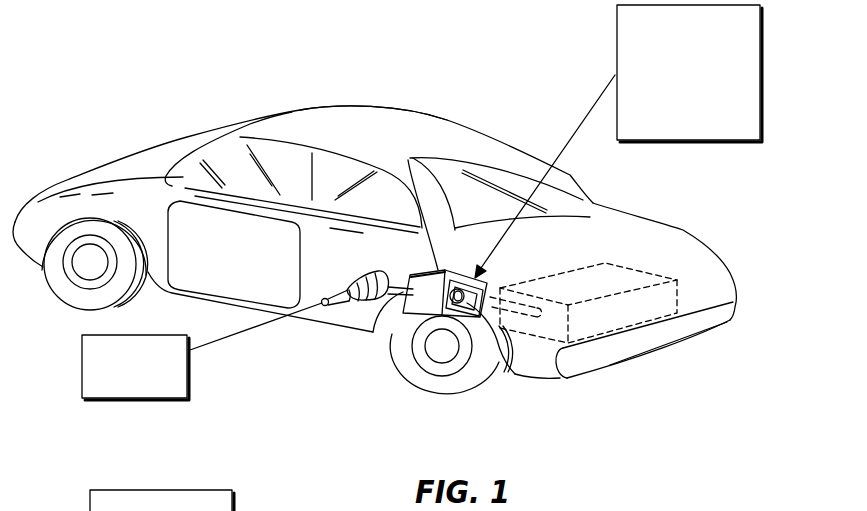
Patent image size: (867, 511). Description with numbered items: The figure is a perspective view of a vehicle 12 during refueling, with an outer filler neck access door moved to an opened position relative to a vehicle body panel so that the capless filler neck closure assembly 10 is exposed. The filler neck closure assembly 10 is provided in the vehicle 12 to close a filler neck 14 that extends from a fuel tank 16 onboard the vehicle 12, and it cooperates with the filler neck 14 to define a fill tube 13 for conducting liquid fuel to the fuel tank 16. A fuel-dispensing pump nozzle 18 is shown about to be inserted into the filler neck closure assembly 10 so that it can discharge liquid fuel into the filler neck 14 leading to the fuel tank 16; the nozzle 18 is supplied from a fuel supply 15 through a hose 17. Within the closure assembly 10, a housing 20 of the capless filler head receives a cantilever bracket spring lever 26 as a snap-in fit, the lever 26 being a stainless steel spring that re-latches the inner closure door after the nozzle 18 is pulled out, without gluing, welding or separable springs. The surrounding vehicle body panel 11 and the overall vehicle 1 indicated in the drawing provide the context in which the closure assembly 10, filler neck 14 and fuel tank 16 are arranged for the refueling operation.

The vehicle roof 1 is at (403, 153).
The filler neck closure assembly 10 is at (687, 142).
The vehicle body panel 11 is at (372, 333).
The vehicle 12 is at (480, 67).
The fill tube 13 is at (707, 200).
The filler neck 14 is at (520, 313).
The fuel supply 15 is at (127, 400).
The fuel tank 16 is at (618, 273).
The fuel hose 17 is at (228, 339).
The fuel-dispensing pump nozzle 18 is at (352, 275).
The housing 20 is at (462, 317).
The cantilever bracket spring lever 26 is at (441, 315).